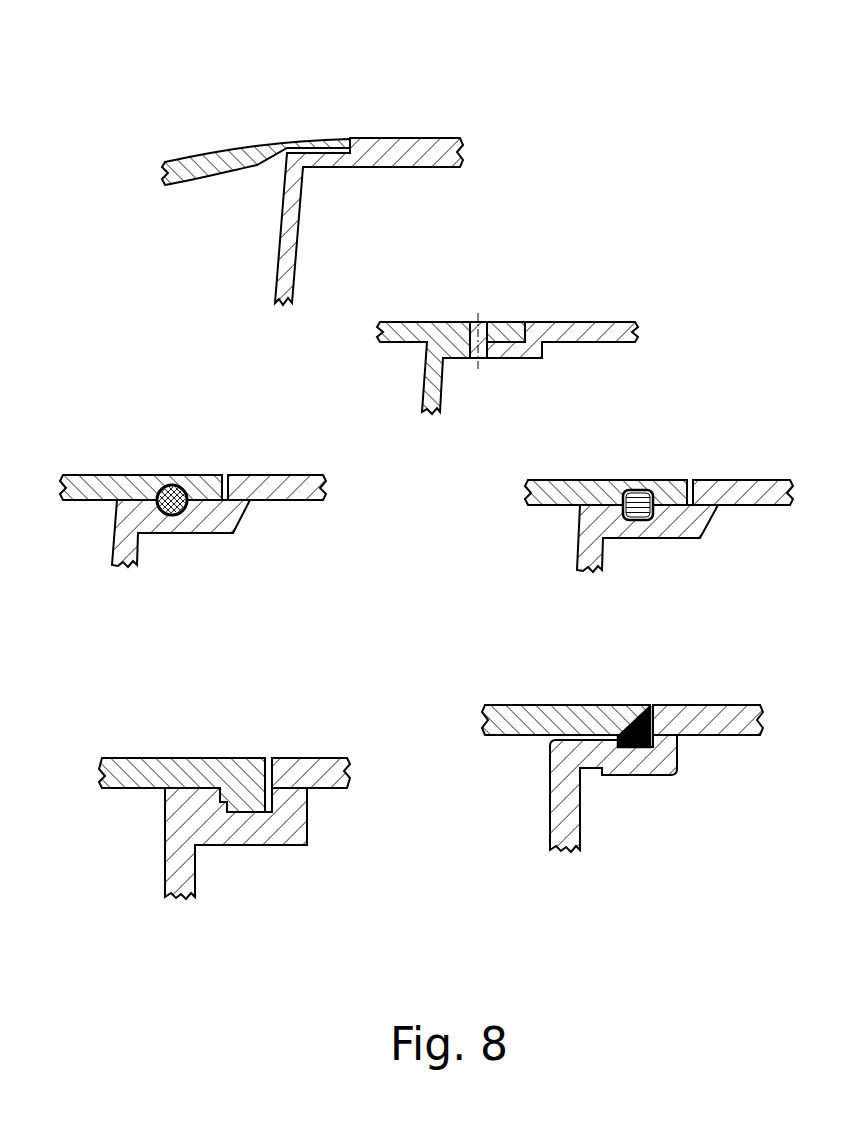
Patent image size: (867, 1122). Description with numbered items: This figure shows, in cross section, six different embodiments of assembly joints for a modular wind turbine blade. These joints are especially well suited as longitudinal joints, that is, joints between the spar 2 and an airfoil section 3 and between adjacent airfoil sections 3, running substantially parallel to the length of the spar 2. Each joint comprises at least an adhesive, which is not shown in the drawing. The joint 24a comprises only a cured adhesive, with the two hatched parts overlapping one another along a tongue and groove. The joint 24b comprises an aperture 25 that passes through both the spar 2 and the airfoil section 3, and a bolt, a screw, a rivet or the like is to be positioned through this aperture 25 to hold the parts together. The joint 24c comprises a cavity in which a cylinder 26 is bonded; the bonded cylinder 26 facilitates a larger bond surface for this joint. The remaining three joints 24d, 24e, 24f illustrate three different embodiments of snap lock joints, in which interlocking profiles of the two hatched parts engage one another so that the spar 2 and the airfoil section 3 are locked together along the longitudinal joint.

The spar 2 is at (617, 332).
The airfoil section 3 is at (392, 332).
The joint 24a is at (333, 113).
The joint 24b is at (516, 313).
The joint 24c is at (176, 457).
The joint 24d is at (702, 460).
The joint 24e is at (697, 802).
The joint 24f is at (257, 890).
The aperture 25 is at (482, 332).
The cylinder 26 is at (170, 485).